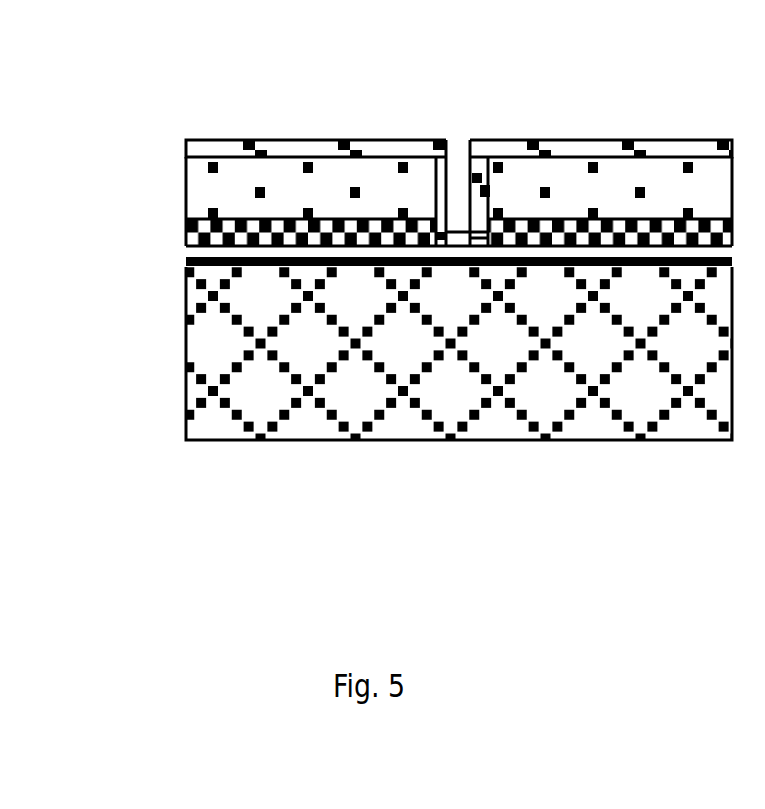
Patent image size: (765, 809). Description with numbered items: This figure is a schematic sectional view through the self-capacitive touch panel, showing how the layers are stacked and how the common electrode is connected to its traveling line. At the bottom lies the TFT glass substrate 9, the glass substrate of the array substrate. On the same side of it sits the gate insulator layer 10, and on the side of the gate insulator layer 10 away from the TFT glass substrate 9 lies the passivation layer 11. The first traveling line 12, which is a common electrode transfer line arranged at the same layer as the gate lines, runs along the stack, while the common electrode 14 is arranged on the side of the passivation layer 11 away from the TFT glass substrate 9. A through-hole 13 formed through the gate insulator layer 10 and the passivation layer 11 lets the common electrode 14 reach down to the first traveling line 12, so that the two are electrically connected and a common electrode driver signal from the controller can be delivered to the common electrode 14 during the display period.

The TFT glass substrate 9 is at (223, 353).
The gate insulator layer 10 is at (188, 229).
The passivation layer 11 is at (205, 183).
The first traveling line 12 is at (275, 258).
The through-hole 13 is at (463, 185).
The common electrode 14 is at (312, 148).